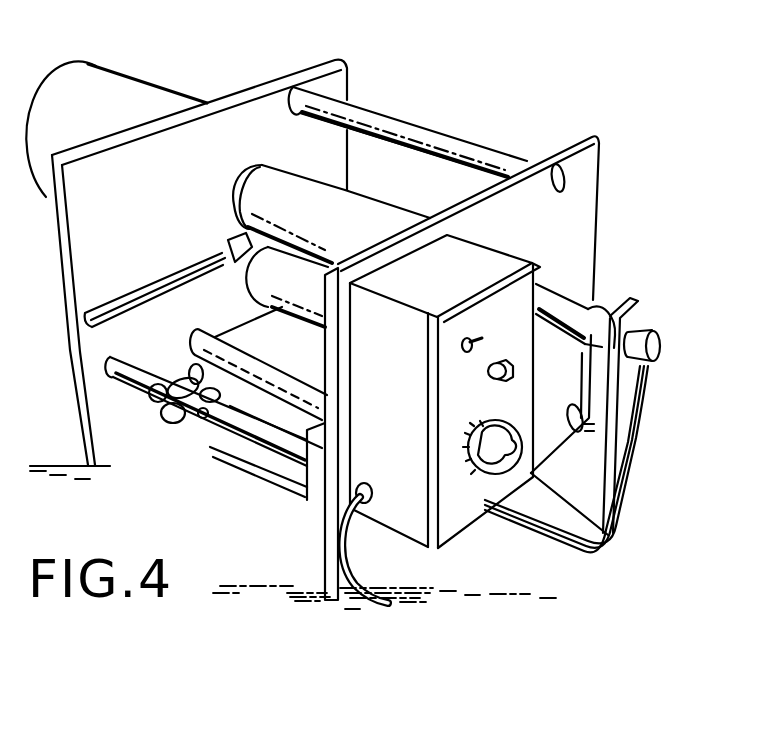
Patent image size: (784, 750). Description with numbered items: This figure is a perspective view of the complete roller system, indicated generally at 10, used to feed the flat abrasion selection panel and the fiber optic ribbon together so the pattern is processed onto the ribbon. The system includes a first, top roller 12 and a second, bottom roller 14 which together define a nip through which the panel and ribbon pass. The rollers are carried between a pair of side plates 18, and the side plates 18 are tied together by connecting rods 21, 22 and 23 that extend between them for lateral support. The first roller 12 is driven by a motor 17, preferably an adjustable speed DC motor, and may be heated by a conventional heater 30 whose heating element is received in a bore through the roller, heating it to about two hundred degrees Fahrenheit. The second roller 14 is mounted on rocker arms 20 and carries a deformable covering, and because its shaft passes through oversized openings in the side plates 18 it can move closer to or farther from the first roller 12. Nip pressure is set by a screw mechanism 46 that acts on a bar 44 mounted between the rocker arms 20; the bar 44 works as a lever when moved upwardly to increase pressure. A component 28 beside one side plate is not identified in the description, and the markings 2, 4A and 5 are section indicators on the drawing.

The heat sealing apparatus 10 is at (442, 90).
The first roller 12 is at (293, 178).
The second roller 14 is at (238, 248).
The motor 17 is at (104, 72).
The side plates 18 is at (237, 112).
The rocker arms 20 is at (199, 260).
The connecting rod 21 is at (568, 414).
The connecting rod 22 is at (212, 445).
The connecting rod 23 is at (567, 182).
The drive shaft / motor 28 is at (572, 309).
The heater 30 is at (458, 524).
The bar 44 is at (231, 416).
The screw mechanism 46 is at (213, 460).
The section line 5-5 / locking knob 5 is at (287, 504).
The section line 2- 2 is at (100, 422).
The section line 4A- 4A is at (99, 290).